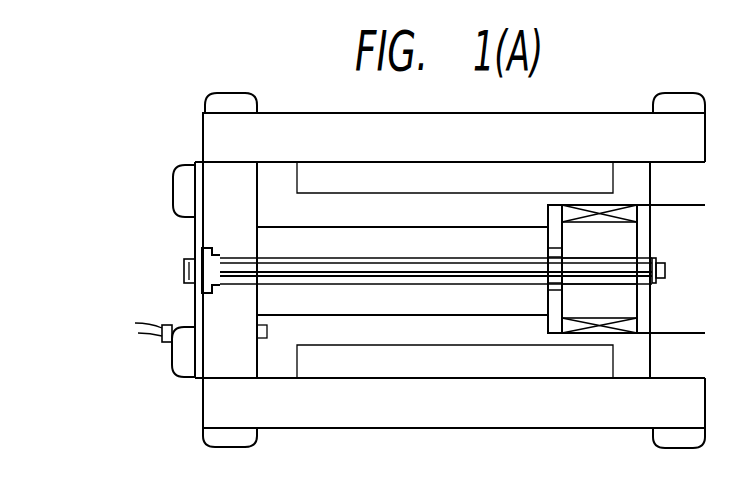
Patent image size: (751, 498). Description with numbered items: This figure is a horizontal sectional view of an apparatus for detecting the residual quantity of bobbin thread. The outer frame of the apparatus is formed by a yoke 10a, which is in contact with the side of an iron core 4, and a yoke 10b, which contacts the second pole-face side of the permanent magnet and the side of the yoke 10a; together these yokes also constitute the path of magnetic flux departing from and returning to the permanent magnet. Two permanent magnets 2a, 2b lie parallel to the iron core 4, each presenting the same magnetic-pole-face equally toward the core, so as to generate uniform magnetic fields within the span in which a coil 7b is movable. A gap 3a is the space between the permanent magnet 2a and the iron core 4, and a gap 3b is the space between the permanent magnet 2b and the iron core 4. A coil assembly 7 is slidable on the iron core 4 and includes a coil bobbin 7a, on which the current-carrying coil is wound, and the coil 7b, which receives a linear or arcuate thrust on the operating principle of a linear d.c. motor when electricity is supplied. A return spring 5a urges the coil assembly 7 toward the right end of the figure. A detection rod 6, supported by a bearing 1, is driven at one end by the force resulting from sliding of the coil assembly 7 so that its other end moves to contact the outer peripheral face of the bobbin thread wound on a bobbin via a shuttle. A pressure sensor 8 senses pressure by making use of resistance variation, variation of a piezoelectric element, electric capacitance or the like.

The bearing 1 is at (206, 248).
The permanent magnet 2a is at (312, 172).
The permanent magnet 2b is at (565, 370).
The gap 3a is at (343, 203).
The gap 3b is at (467, 333).
The iron core 4 is at (382, 237).
The return spring 5a is at (428, 240).
The detection rod 6 is at (485, 240).
The coil assembly 7 is at (630, 246).
The coil bobbin 7a is at (556, 205).
The coil 7b is at (612, 205).
The pressure sensor 8 is at (172, 326).
The yoke 10a is at (242, 372).
The yoke 10b is at (447, 418).